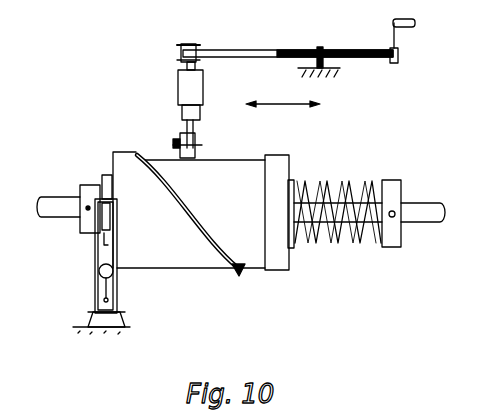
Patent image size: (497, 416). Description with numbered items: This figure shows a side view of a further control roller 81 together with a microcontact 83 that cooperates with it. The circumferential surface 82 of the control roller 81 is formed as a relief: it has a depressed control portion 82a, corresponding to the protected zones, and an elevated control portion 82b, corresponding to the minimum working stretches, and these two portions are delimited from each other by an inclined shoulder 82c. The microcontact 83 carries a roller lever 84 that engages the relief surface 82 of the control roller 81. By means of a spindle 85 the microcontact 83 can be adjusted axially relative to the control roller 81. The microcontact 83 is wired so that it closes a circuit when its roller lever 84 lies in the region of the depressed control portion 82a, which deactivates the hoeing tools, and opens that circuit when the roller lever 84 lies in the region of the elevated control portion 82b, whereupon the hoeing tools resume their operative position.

The control roller 81 is at (108, 155).
The circumferential surface 82 is at (240, 274).
The depressed control portion 82a is at (244, 156).
The elevated control portion 82b is at (168, 264).
The inclined shoulder 82c is at (188, 200).
The microcontact 83 is at (182, 92).
The roller lever 84 is at (197, 139).
The spindle 85 is at (263, 50).